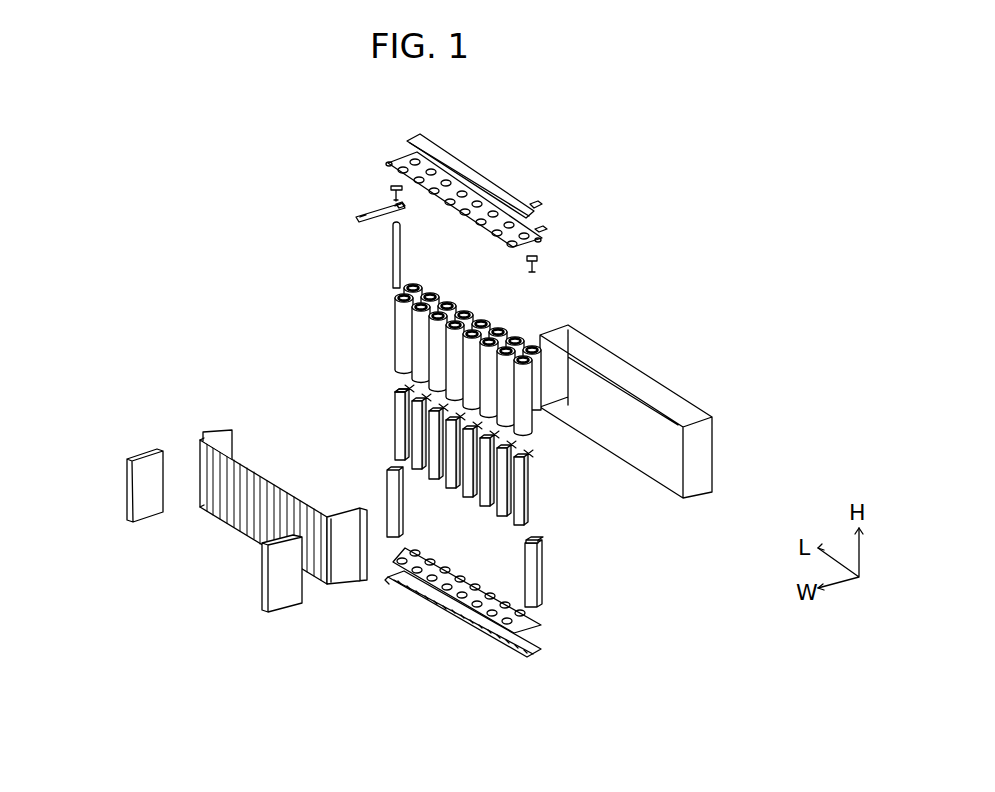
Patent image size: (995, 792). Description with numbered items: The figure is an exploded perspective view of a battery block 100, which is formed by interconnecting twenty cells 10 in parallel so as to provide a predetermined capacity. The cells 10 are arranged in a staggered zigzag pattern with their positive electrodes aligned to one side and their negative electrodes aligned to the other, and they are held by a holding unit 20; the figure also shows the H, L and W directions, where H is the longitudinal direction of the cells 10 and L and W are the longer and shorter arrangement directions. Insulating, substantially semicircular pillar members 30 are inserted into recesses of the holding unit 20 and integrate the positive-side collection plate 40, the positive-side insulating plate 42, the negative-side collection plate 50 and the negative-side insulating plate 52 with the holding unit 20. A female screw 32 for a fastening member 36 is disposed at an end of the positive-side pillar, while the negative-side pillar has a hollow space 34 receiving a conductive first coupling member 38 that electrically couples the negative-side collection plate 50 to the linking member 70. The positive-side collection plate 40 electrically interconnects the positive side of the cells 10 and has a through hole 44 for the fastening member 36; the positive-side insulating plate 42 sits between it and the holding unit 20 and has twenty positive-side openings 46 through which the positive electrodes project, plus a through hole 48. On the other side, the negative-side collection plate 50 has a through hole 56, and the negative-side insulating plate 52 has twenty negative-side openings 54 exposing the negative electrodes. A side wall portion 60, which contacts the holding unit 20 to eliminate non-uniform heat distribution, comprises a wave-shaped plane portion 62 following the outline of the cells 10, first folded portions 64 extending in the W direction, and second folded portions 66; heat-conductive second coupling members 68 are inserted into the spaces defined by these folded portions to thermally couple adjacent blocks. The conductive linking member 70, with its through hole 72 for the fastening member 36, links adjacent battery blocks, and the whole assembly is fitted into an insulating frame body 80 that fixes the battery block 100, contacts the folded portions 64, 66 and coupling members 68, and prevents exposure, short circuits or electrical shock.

The cells 10 is at (500, 312).
The holding unit 20 is at (540, 513).
The pillar members 30 is at (387, 482).
The female screw 32 is at (545, 538).
The hollow space 34 is at (396, 452).
The fastening member 36 is at (390, 188).
The first coupling member 38 is at (393, 264).
The positive-side collection plate 40 is at (486, 183).
The positive-side insulating plate 42 is at (395, 158).
The through hole 44 is at (541, 207).
The positive-side openings 46 is at (544, 230).
The through hole 48 is at (387, 166).
The negative-side collection plate 50 is at (463, 636).
The negative-side insulating plate 52 is at (501, 579).
The negative-side openings 54 is at (447, 563).
The through hole 56 is at (388, 580).
The side wall portion 60 is at (240, 421).
The plane portion 62 is at (197, 450).
The first folded portions 64 is at (222, 432).
The second folded portions 66 is at (229, 433).
The second coupling members 68 is at (125, 510).
The linking member 70 is at (392, 212).
The through hole 72 is at (358, 217).
The frame body 80 is at (636, 382).
The battery block 100 is at (858, 749).